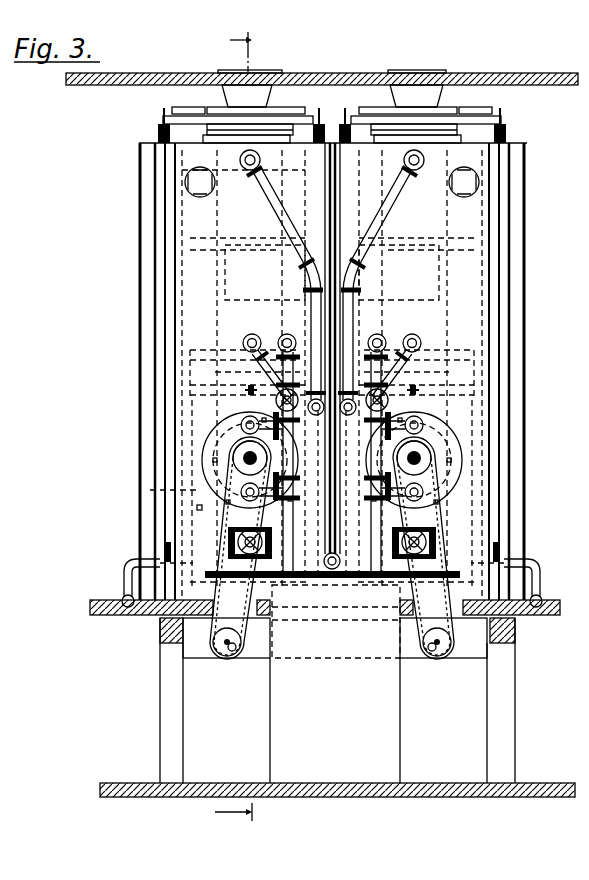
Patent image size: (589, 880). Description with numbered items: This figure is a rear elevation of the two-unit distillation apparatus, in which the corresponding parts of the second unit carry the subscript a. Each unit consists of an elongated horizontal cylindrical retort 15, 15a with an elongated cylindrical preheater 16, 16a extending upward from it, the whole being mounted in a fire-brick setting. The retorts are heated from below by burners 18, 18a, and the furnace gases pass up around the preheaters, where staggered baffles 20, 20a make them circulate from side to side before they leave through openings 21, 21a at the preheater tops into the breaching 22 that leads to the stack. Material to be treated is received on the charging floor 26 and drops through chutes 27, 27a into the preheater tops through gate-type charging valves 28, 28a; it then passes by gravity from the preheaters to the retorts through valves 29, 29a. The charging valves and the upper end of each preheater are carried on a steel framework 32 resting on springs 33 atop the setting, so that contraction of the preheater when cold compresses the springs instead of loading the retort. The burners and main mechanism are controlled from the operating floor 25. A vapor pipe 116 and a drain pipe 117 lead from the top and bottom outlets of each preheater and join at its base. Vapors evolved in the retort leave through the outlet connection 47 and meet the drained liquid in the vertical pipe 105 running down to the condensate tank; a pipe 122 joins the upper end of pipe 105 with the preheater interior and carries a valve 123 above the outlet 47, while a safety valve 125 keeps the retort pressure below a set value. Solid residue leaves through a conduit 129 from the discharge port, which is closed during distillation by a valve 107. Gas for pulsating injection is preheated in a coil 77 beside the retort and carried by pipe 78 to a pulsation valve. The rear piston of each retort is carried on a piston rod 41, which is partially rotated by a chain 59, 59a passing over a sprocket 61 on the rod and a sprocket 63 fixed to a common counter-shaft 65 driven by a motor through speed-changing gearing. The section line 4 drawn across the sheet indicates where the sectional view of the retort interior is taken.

The section line 4- 4 is at (222, 428).
The charging floor 26 is at (158, 73).
The chute 27 is at (270, 72).
The chute 27a is at (428, 73).
The steel framework 32 is at (183, 107).
The charging valve 28 is at (290, 112).
The charging valve 28a is at (437, 130).
The springs 33 is at (157, 137).
The breaching 22 is at (211, 167).
The opening 21 is at (185, 183).
The opening 21a is at (480, 183).
The preheater 16 is at (175, 271).
The preheater 16a is at (500, 222).
The pipe 116 is at (262, 190).
The staggered baffles 20 is at (252, 250).
The staggered baffles 20a is at (425, 250).
The pipe 117 is at (250, 355).
The pipe 122 is at (278, 338).
The valve 123 is at (312, 398).
The valve 29 is at (185, 372).
The valve 29a is at (485, 368).
The safety valve 125 is at (247, 393).
The outlet connection 47 is at (247, 425).
The retort 15 is at (207, 436).
The retort 15a is at (463, 443).
The sprocket 61 is at (246, 432).
The piston rod 41 is at (243, 457).
The preheating coil 77 is at (142, 488).
The pipe 78 is at (197, 508).
The vertical pipe 105 is at (285, 528).
The valve 107 is at (228, 540).
The burners 18 is at (132, 560).
The burners 18a is at (535, 560).
The operating floor 25 is at (120, 601).
The conduit 129 is at (262, 596).
The chain 59 is at (245, 637).
The chain 59a is at (396, 606).
The sprocket 63 is at (222, 656).
The counter-shaft 65 is at (234, 652).